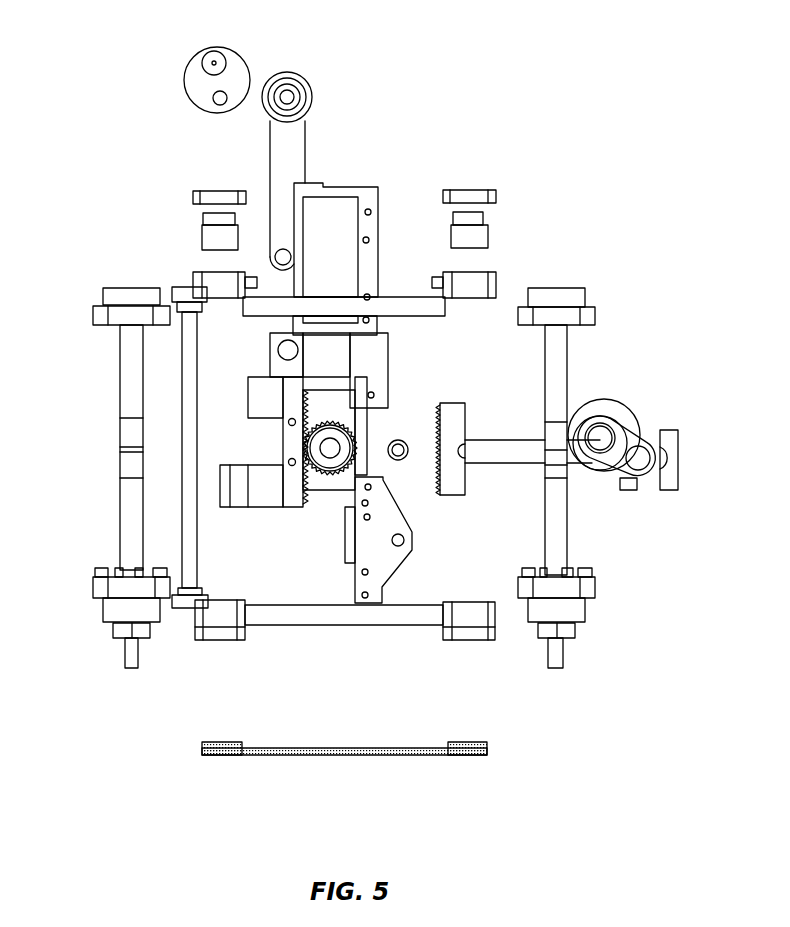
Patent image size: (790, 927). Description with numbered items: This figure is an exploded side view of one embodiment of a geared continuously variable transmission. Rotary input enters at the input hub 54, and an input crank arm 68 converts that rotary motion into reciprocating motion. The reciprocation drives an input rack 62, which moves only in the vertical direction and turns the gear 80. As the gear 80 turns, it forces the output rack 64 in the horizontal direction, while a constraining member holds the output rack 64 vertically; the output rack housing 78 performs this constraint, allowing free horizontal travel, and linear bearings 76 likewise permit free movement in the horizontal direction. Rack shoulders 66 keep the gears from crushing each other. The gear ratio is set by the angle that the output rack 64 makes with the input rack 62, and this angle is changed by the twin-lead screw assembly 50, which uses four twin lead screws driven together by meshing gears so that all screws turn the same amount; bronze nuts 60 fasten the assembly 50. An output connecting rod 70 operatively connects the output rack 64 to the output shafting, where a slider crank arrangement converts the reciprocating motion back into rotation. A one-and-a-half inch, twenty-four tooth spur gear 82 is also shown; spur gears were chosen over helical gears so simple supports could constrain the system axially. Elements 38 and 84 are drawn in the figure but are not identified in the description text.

The cam assembly 38 is at (612, 395).
The twin-lead screw assembly 50 is at (120, 393).
The input hub 54 is at (215, 47).
The bronze nuts 60 is at (202, 229).
The input rack 62 is at (305, 502).
The output rack 64 is at (452, 497).
The rack shoulders 66 is at (350, 185).
The input crank arm 68 is at (270, 157).
The output connecting rod 70 is at (527, 438).
The linear bearings 76 is at (392, 364).
The output rack housing 78 is at (413, 546).
The gear 80 is at (338, 480).
The 24 tooth spur gear 82 is at (213, 742).
The strip 84 is at (335, 748).